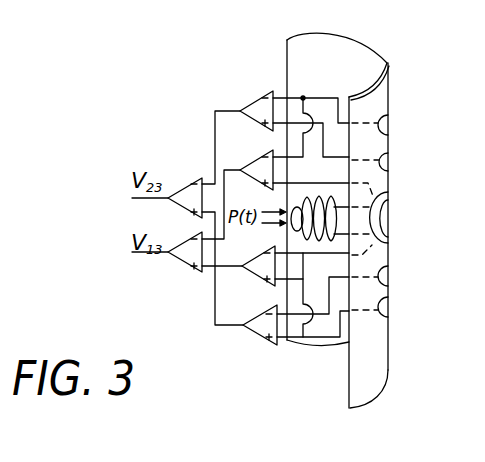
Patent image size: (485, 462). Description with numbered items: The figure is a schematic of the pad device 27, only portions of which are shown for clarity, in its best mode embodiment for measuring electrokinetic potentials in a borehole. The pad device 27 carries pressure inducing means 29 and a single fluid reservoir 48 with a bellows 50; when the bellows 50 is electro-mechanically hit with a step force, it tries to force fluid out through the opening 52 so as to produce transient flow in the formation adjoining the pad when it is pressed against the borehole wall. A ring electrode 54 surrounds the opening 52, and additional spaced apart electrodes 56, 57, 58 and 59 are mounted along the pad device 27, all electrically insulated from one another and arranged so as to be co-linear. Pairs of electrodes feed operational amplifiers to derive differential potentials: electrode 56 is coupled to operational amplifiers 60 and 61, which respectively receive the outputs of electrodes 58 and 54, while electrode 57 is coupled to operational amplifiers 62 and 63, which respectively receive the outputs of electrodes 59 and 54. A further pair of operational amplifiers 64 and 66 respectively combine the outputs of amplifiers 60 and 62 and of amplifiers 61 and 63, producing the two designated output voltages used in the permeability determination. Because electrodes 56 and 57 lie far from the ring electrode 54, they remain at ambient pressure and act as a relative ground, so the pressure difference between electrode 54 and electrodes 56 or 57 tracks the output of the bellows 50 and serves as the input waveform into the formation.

The pad device 27 is at (388, 64).
The pressure inducing means 29 is at (279, 201).
The fluid reservoir 48 is at (338, 222).
The bellows 50 is at (320, 198).
The opening 52 is at (384, 221).
The ring electrode 54 is at (388, 198).
The electrode 56 is at (390, 306).
The electrode 57 is at (390, 126).
The electrode 58 is at (390, 277).
The electrode 59 is at (390, 165).
The operational amplifier 60 is at (258, 345).
The operational amplifier 61 is at (270, 247).
The operational amplifier 62 is at (272, 91).
The operational amplifier 63 is at (268, 151).
The operational amplifier 64 is at (202, 176).
The operational amplifier 66 is at (199, 273).